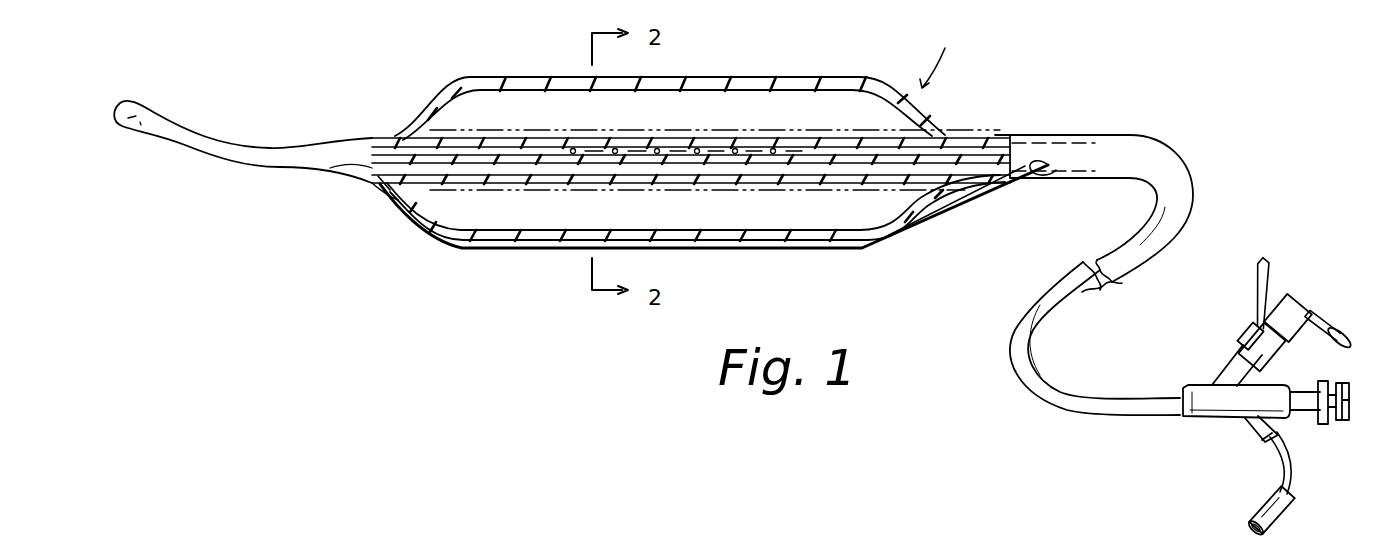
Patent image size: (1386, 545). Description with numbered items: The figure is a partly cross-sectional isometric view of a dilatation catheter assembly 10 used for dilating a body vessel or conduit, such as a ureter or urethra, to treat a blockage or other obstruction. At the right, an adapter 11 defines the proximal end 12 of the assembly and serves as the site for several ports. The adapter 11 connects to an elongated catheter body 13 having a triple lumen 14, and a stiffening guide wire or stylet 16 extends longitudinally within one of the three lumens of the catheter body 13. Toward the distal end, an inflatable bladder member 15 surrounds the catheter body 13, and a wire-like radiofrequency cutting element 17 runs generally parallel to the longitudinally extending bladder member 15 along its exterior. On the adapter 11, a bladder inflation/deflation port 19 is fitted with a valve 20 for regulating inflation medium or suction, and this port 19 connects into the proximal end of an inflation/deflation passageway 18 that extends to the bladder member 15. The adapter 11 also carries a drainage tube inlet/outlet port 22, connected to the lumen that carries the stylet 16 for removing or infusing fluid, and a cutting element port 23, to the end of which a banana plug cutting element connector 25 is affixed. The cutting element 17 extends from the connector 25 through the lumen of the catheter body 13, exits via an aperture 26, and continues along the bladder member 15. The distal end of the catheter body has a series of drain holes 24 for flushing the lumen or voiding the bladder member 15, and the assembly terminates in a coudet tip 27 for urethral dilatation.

The dilatation catheter assembly 10 is at (951, 58).
The adapter 11 is at (1190, 388).
The proximal end 12 is at (1341, 390).
The catheter body 13 is at (1100, 262).
The triple lumen 14 is at (1073, 137).
The inflatable bladder member 15 is at (766, 77).
The stiffening guide wire or stylet 16 is at (393, 143).
The cutting element 17 is at (453, 252).
The inflation/deflation passageway 18 is at (762, 148).
The bladder inflation/deflation port 19 is at (1250, 333).
The valve 20 is at (1260, 300).
The drainage tube inlet/outlet port 22 is at (1350, 399).
The cutting element port 23 is at (1258, 438).
The drain holes 24 is at (384, 176).
The cutting element connector 25 is at (1262, 502).
The aperture 26 is at (1053, 170).
The coudet tip 27 is at (244, 168).